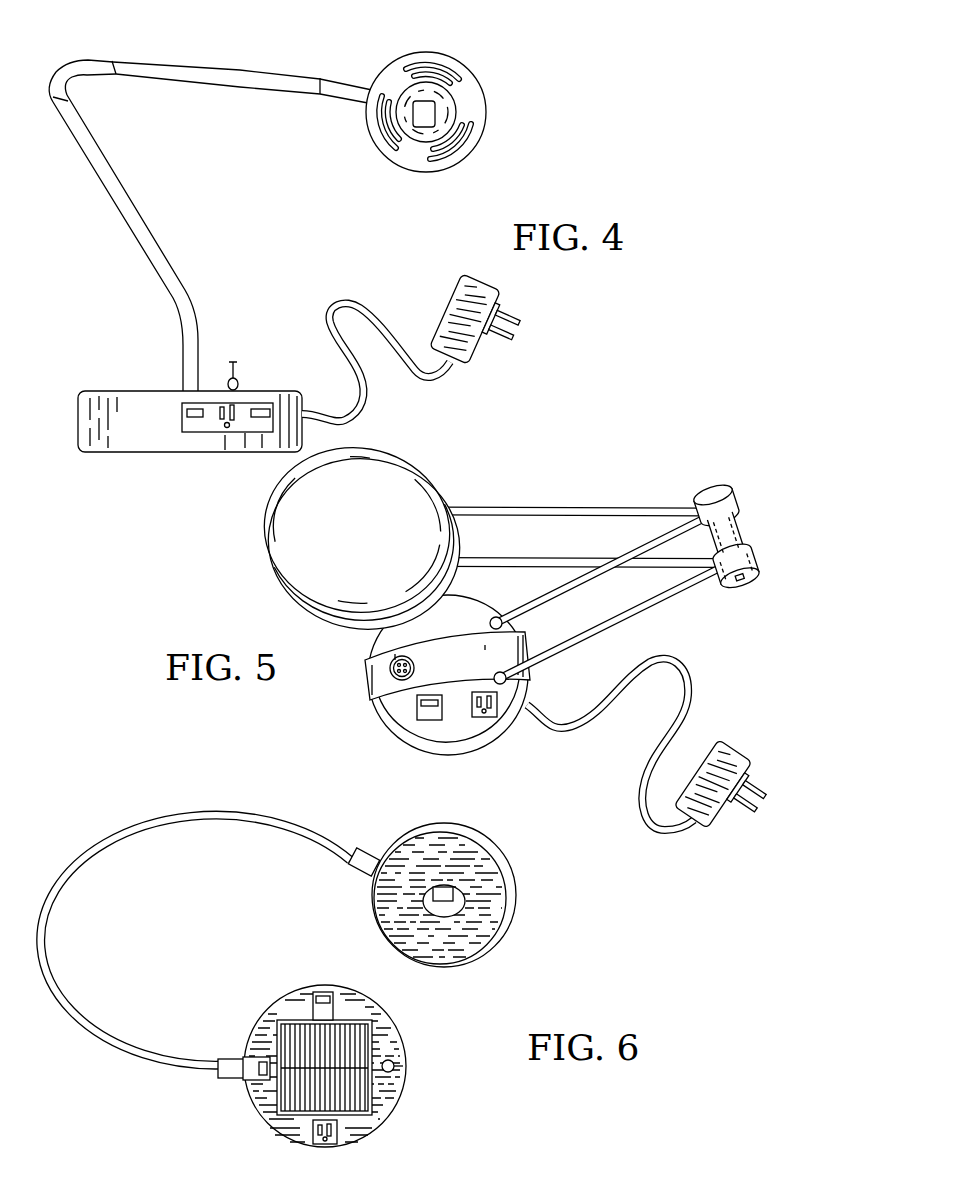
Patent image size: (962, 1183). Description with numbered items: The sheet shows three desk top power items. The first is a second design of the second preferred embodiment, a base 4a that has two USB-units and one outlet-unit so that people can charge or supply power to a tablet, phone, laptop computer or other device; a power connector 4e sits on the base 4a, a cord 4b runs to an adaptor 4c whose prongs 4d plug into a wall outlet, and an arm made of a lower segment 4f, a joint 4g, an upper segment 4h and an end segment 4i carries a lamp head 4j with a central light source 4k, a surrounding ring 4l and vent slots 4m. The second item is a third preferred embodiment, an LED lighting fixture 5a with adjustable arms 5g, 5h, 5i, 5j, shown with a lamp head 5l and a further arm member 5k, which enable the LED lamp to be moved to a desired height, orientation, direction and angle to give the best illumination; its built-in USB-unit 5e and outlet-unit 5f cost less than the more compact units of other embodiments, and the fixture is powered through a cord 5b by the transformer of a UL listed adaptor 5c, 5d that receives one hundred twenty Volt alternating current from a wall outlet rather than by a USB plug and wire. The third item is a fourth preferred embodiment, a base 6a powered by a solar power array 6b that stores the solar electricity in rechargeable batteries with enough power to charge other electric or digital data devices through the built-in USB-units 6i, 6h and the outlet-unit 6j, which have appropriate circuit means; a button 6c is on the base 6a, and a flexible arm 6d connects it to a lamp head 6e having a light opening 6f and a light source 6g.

In FIG. 4, the base 4a is at (143, 441).
In FIG. 4, the power cord 4b is at (325, 318).
In FIG. 4, the power adapter 4c is at (450, 300).
In FIG. 4, the plug prongs 4d is at (522, 322).
In FIG. 4, the power connector 4e is at (233, 360).
In FIG. 4, the arm lower segment 4f is at (113, 191).
In FIG. 4, the arm joint 4g is at (72, 78).
In FIG. 4, the arm upper segment 4h is at (213, 78).
In FIG. 4, the arm end segment 4i is at (338, 84).
In FIG. 4, the lamp head 4j is at (406, 160).
In FIG. 4, the light source 4k is at (418, 106).
In FIG. 4, the reflector ring 4l is at (437, 112).
In FIG. 4, the vent slots 4m is at (457, 150).
In FIG. 5, the LED lighting fixture 5a is at (385, 708).
In FIG. 5, the power cord 5b is at (537, 730).
In FIG. 5, the UL listed adaptor 5c is at (737, 746).
In FIG. 5, the UL listed adaptor 5d is at (750, 815).
In FIG. 5, the USB-unit 5e is at (420, 713).
In FIG. 5, the outlet-unit 5f is at (478, 718).
In FIG. 5, the adjustable arm 5g is at (668, 603).
In FIG. 5, the adjustable arm 5h is at (572, 583).
In FIG. 5, the adjustable arm 5i is at (712, 492).
In FIG. 5, the adjustable arm 5j is at (553, 562).
In FIG. 5, the upper horizontal arm 5k is at (525, 510).
In FIG. 5, the lamp head 5l is at (440, 497).
In FIG. 6, the base 6a is at (402, 1095).
In FIG. 6, the solar power array 6b is at (285, 1098).
In FIG. 6, the switch button 6c is at (398, 1066).
In FIG. 6, the flexible arm 6d is at (178, 1058).
In FIG. 6, the lamp head 6e is at (372, 912).
In FIG. 6, the light opening 6f is at (447, 905).
In FIG. 6, the light source 6g is at (435, 898).
In FIG. 6, the USB-unit 6h is at (312, 1000).
In FIG. 6, the USB-unit 6i is at (252, 1058).
In FIG. 6, the outlet-unit 6j is at (345, 1136).